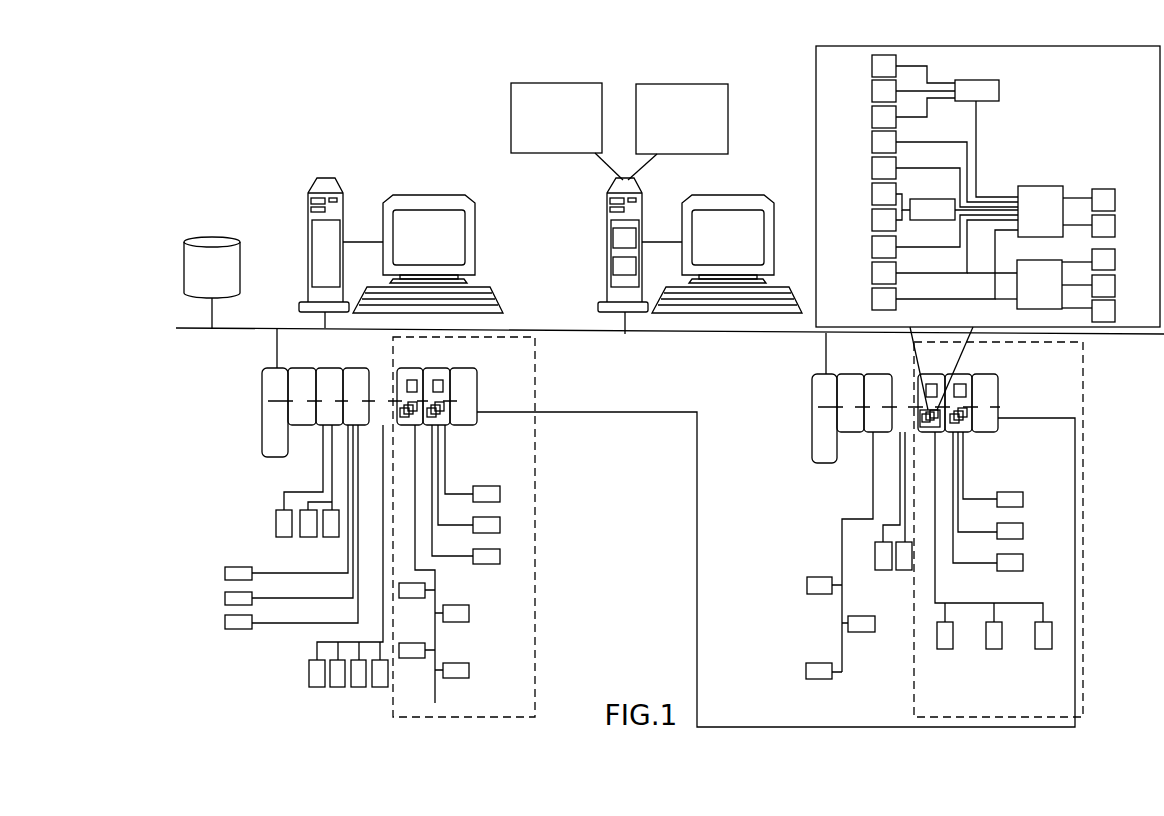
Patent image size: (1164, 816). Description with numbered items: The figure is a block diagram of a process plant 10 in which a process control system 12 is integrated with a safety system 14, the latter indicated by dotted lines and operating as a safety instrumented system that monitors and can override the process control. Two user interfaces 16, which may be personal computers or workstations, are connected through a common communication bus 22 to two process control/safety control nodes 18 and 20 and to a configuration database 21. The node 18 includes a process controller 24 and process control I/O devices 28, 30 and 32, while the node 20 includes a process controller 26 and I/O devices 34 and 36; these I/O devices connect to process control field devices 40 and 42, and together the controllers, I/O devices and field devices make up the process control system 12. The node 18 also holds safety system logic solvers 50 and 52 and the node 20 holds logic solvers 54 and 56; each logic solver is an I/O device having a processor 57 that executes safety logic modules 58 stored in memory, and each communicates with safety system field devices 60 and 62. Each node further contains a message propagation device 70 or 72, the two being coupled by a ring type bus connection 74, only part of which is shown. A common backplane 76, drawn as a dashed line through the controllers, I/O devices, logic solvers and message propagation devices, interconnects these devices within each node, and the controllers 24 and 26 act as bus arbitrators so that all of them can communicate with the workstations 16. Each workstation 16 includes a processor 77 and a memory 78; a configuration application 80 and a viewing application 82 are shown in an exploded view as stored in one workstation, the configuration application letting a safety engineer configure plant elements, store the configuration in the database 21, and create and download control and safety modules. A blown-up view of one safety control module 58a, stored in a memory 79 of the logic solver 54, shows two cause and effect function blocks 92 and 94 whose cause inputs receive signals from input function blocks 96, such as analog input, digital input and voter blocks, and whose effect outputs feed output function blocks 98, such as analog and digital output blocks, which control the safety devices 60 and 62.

The process plant 10 is at (238, 158).
The process control system 12 is at (198, 523).
The safety system 14 is at (540, 643).
The user interface 16 is at (323, 178).
The process control/safety control node 18 is at (228, 377).
The process control/safety control node 20 is at (1097, 388).
The configuration database 21 is at (240, 253).
The communication bus 22 is at (548, 330).
The process controller 24 is at (275, 458).
The process controller 26 is at (823, 464).
The process control system input/output device 28 is at (332, 368).
The process control system input/output device 30 is at (359, 368).
The process control system input/output device 32 is at (383, 368).
The process control system input/output device 34 is at (878, 374).
The process control system input/output device 36 is at (906, 374).
The field device 40 is at (285, 537).
The field device 42 is at (316, 687).
The safety system logic solver 50 is at (412, 368).
The safety system logic solver 52 is at (436, 368).
The safety system logic solver 54 is at (938, 374).
The safety system logic solver 56 is at (966, 377).
The processor 57 is at (418, 385).
The safety logic module 58 is at (405, 420).
The safety control module 58a is at (814, 192).
The safety system field device 60 is at (500, 494).
The safety system field device 62 is at (408, 598).
The message propagation device 70 is at (460, 425).
The message propagation device 72 is at (996, 374).
The ring type bus connection 74 is at (697, 560).
The common backplane 76 is at (275, 401).
The processor 77 is at (613, 272).
The memory 78 is at (613, 233).
The memory 79 is at (925, 427).
The configuration application 80 is at (510, 96).
The viewing application 82 is at (730, 104).
The cause and effect function block 92 is at (1045, 186).
The cause and effect function block 94 is at (1045, 260).
The function block 96 is at (866, 182).
The output function block 98 is at (1120, 210).